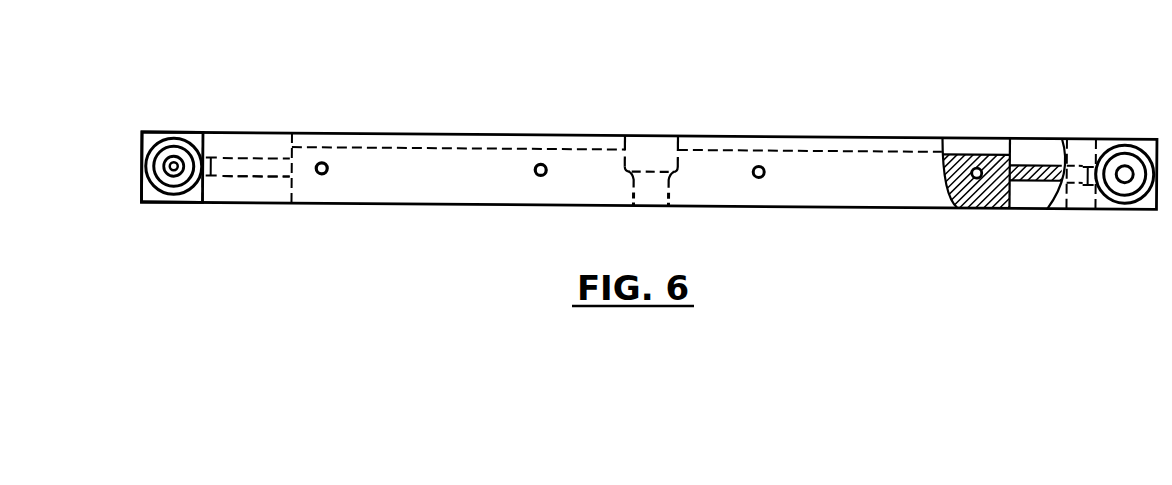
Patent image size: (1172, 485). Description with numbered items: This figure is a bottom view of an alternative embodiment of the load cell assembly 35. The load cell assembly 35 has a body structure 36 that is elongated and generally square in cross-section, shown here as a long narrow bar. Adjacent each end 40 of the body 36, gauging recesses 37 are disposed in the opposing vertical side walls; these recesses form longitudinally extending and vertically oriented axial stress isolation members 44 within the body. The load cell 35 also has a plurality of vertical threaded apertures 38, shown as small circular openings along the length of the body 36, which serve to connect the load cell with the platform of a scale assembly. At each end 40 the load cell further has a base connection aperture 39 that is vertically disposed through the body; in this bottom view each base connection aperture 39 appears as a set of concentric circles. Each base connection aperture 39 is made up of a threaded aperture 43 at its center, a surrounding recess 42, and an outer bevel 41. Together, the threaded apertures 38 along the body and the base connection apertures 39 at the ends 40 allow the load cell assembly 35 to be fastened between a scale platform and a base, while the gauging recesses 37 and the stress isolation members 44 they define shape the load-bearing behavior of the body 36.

The load cell assembly 35 is at (608, 151).
The body structure 36 is at (442, 191).
The gauging recess 37 is at (260, 147).
The vertical threaded aperture 38 is at (328, 161).
The base connection aperture 39 is at (606, 188).
The end 40 is at (142, 185).
The bevel 41 is at (163, 188).
The recess 42 is at (177, 177).
The threaded aperture 43 is at (172, 166).
The axial stress isolation member 44 is at (270, 167).